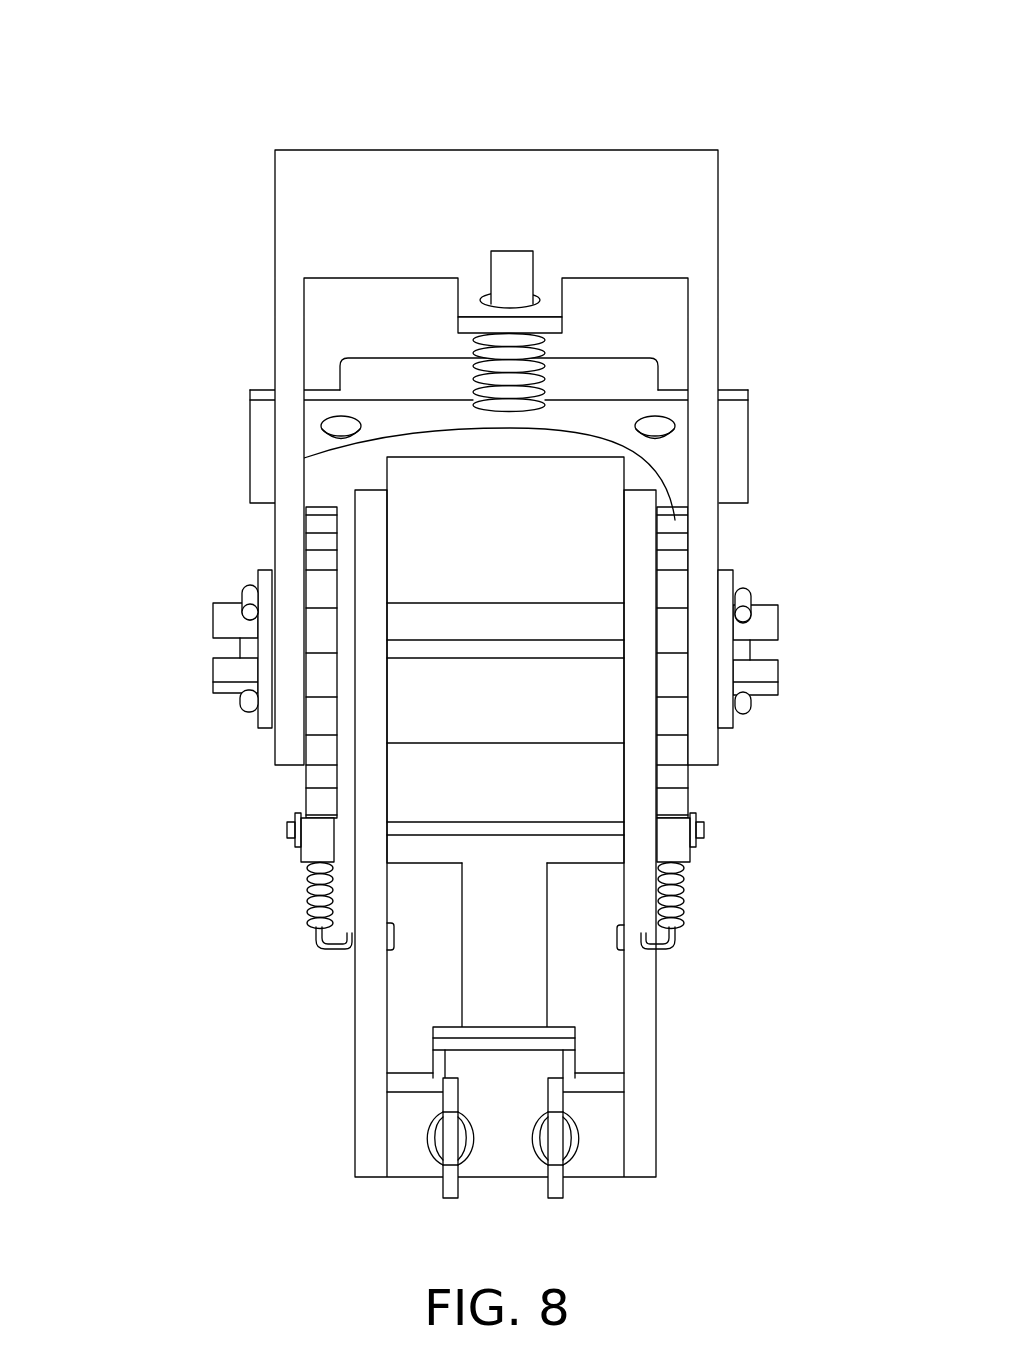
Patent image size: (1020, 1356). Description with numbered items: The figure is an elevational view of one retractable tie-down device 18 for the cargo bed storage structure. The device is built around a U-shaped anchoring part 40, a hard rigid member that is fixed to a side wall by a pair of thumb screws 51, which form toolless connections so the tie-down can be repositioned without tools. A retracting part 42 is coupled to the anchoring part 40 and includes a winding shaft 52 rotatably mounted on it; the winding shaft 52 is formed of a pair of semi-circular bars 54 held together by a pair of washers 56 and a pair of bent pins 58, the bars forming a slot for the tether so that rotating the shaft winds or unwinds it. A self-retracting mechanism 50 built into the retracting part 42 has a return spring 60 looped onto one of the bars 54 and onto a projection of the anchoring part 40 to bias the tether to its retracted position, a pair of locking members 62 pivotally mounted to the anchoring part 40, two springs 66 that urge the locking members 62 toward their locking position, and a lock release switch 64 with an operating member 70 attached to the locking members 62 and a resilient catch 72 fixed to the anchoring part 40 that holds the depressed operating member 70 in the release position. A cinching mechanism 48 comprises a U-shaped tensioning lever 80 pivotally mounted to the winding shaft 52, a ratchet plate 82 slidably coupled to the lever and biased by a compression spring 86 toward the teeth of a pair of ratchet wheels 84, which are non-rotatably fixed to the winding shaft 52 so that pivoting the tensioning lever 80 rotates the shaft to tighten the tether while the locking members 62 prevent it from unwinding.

The tie-down device 18 is at (337, 90).
The anchoring part 40 is at (403, 1190).
The retracting part 42 is at (82, 590).
The cinching mechanism 48 is at (182, 230).
The self-retracting mechanism 50 is at (245, 1042).
The thumb screws 51 is at (547, 1187).
The winding shaft 52 is at (182, 619).
The semi-circular bars 54 is at (780, 624).
The washers 56 is at (268, 570).
The bent pins 58 is at (245, 588).
The return spring 60 is at (347, 749).
The locking members 62 is at (657, 868).
The lock release switch 64 is at (297, 973).
The springs 66 is at (327, 910).
The operating member 70 is at (490, 972).
The catch 72 is at (433, 1035).
The tensioning lever 80 is at (275, 258).
The ratchet plate 82 is at (385, 358).
The ratchet wheels 84 is at (321, 518).
The compression spring 86 is at (543, 349).